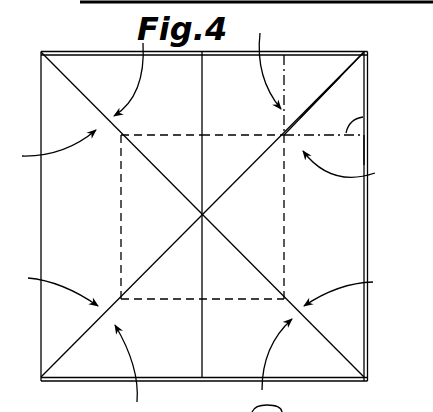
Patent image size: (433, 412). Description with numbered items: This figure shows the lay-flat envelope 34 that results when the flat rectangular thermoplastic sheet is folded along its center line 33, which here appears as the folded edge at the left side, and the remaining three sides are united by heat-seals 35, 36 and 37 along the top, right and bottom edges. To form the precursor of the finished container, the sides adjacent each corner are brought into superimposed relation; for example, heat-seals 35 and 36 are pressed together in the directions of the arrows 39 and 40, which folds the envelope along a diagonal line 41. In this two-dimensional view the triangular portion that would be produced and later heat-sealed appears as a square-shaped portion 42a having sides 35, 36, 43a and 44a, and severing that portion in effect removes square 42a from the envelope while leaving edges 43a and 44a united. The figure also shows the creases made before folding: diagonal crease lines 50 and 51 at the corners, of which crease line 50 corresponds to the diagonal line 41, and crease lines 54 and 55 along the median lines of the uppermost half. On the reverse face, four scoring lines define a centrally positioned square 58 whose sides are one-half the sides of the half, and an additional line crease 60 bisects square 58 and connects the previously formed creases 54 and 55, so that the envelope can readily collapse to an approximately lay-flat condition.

The center line 33 is at (41, 213).
The envelope 34 is at (368, 233).
The heat-seal 35 is at (300, 52).
The heat-seal 36 is at (364, 149).
The heat-seal 37 is at (228, 380).
The arrow 39 is at (262, 78).
The arrow 40 is at (343, 178).
The diagonal line 41 is at (258, 164).
The square-shaped portion 42a is at (353, 89).
The line 43a is at (286, 86).
The line 44a is at (364, 115).
The diagonal crease line 50 is at (318, 99).
The diagonal crease line 51 is at (316, 324).
The crease line 54 is at (202, 98).
The crease line 55 is at (202, 337).
The square scoring lines 58 is at (242, 135).
The line crease 60 is at (202, 160).